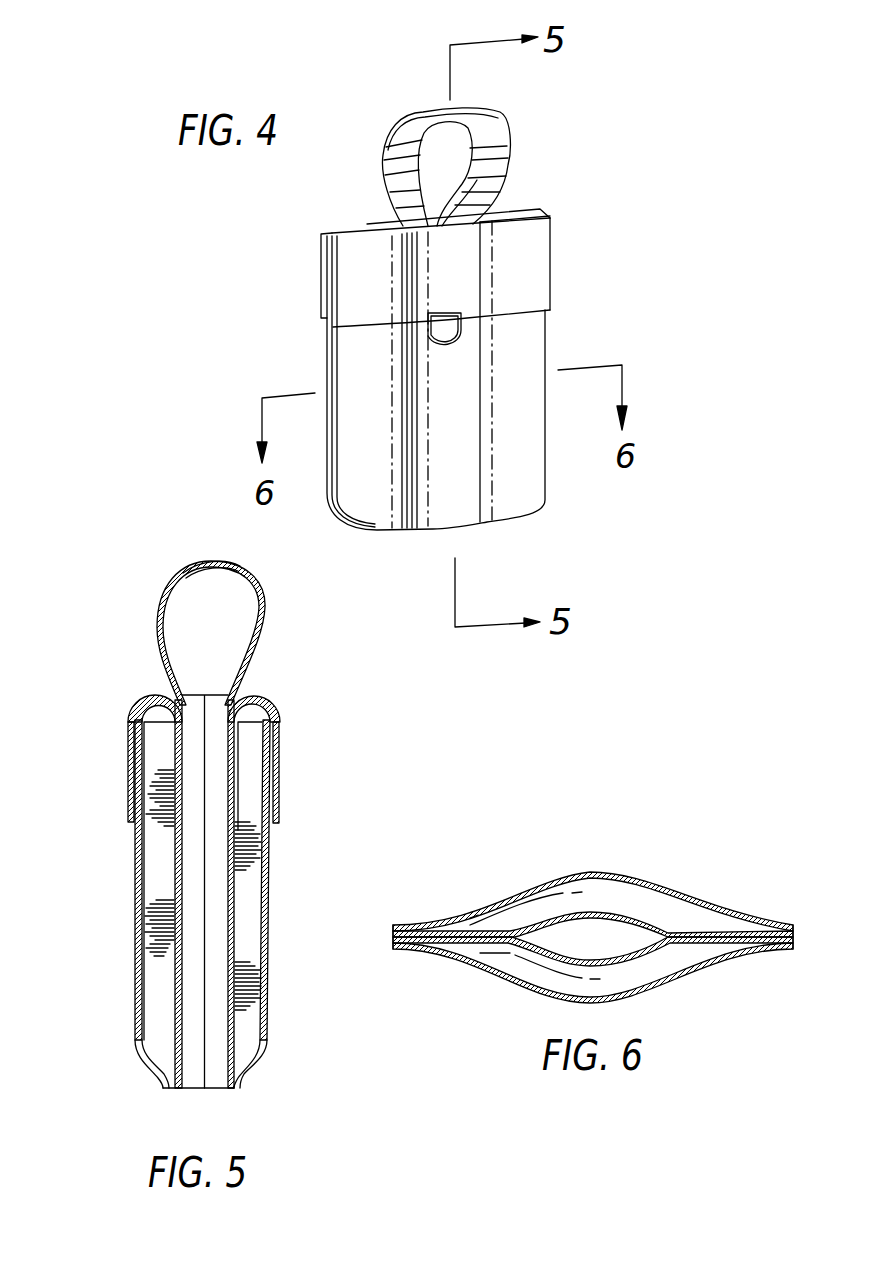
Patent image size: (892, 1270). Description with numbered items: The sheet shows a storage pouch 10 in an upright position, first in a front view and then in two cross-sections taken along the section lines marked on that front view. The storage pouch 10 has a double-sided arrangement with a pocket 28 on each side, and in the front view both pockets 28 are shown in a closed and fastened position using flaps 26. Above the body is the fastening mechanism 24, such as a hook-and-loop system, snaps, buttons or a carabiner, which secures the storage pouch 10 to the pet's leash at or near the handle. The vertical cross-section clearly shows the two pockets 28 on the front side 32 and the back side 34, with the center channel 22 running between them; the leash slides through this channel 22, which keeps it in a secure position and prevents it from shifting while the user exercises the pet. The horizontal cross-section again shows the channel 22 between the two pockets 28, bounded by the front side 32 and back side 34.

In FIG. 4, the storage pouch 10 is at (678, 255).
In FIG. 5, the center channel 22 is at (207, 1075).
In FIG. 6, the center channel 22 is at (613, 940).
In FIG. 4, the fastening mechanism 24 is at (510, 160).
In FIG. 5, the fastening mechanism 24 is at (264, 625).
In FIG. 4, the flaps 26 is at (325, 297).
In FIG. 5, the flaps 26 is at (128, 810).
In FIG. 5, the pockets 28 is at (160, 737).
In FIG. 6, the pockets 28 is at (593, 897).
In FIG. 4, the front side 32 is at (512, 480).
In FIG. 5, the front side 32 is at (268, 935).
In FIG. 6, the front side 32 is at (660, 987).
In FIG. 5, the back side 34 is at (140, 944).
In FIG. 6, the back side 34 is at (516, 900).